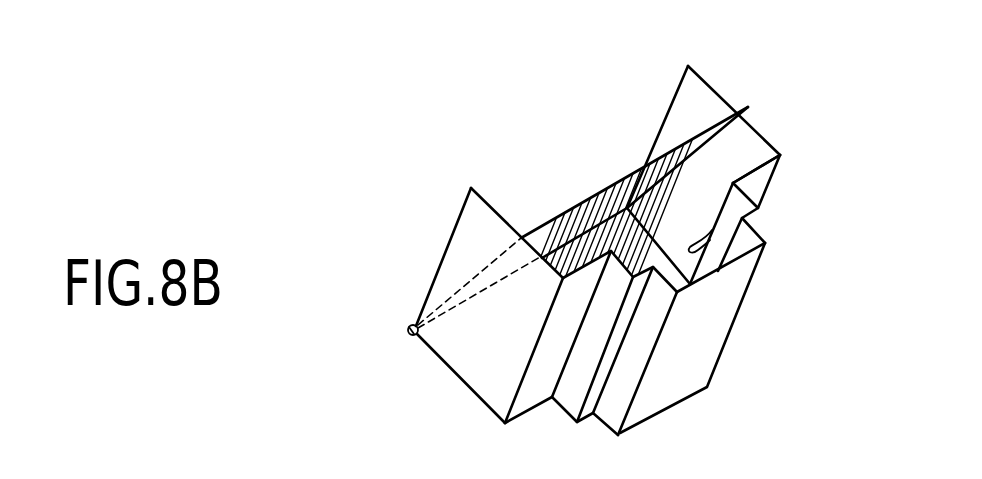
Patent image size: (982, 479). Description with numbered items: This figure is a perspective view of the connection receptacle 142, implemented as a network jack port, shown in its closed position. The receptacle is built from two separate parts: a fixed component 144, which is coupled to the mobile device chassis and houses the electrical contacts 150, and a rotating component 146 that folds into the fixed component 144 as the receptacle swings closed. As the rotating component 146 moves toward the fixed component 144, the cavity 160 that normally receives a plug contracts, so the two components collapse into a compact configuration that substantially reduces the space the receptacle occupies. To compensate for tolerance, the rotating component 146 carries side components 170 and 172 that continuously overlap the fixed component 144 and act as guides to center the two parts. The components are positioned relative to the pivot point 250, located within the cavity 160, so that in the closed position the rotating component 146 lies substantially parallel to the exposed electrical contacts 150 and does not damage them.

The connector receptacle 142 is at (356, 202).
The fixed component 144 is at (544, 217).
The rotating component 146 is at (718, 320).
The electrical contacts 150 is at (582, 208).
The cavity 160 is at (742, 153).
The side component 170 is at (453, 223).
The side component 172 is at (670, 102).
The pivot point 250 is at (407, 334).